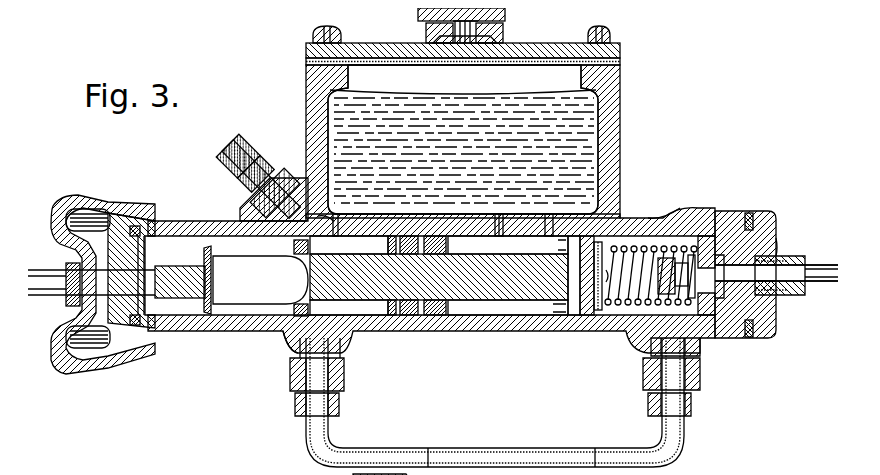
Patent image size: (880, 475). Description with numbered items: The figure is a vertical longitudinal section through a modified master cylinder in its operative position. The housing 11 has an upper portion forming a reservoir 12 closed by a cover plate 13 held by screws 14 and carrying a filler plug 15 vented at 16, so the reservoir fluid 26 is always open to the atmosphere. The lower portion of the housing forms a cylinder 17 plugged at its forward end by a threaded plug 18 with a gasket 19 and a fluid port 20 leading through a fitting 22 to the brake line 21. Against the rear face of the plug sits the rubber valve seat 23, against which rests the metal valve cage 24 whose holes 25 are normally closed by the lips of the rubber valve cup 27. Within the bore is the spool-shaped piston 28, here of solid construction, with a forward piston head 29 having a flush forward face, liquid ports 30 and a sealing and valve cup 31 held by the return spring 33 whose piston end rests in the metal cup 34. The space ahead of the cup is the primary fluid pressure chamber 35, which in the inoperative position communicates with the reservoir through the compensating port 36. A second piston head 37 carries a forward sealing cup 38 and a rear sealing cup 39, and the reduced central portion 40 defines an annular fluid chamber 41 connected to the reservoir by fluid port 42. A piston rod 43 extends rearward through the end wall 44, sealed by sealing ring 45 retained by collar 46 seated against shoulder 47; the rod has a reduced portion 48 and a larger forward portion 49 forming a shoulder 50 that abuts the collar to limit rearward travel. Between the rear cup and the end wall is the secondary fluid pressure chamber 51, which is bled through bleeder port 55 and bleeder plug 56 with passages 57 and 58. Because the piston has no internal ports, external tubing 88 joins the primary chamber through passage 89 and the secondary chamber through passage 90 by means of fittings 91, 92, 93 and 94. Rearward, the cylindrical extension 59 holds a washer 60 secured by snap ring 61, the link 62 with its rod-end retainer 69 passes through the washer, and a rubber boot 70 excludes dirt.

The housing 11 is at (605, 119).
The reservoir 12 is at (592, 100).
The cover plate 13 is at (390, 35).
The screws 14 is at (308, 26).
The filler plug 15 is at (402, 470).
The vents 16 is at (497, 10).
The cylinder 17 is at (656, 250).
The threaded plug 18 is at (770, 226).
The gasket 19 is at (752, 210).
The fluid port 20 is at (740, 257).
The brake line 21 is at (810, 276).
The fitting 22 is at (784, 252).
The rubber valve seat 23 is at (738, 208).
The metal valve cage 24 is at (596, 306).
The holes 25 is at (676, 255).
The fluid 26 is at (370, 82).
The rubber valve cup 27 is at (714, 282).
The piston 28 is at (508, 306).
The forward piston head 29 is at (594, 300).
The liquid ports 30 is at (550, 306).
The sealing and valve cup 31 is at (585, 228).
The return spring 33 is at (613, 228).
The metal cup 34 is at (558, 236).
The primary fluid pressure chamber 35 is at (600, 297).
The compensating port 36 is at (541, 210).
The second piston head 37 is at (404, 228).
The forward sealing cup 38 is at (428, 228).
The rear sealing cup 39 is at (386, 228).
The central portion 40 is at (508, 244).
The annular fluid chamber 41 is at (466, 292).
The fluid port 42 is at (491, 210).
The piston rod 43 is at (226, 262).
The end wall 44 is at (284, 240).
The sealing ring 45 is at (290, 246).
The collar 46 is at (349, 307).
The shoulder 47 is at (272, 330).
The reduced-diameter rod portion 48 is at (398, 307).
The forward rod portion 49 is at (424, 307).
The shoulder 50 is at (349, 244).
The secondary fluid pressure chamber 51 is at (328, 226).
The bleeder port 55 is at (320, 210).
The bleeder plug 56 is at (252, 152).
The fluid passage 57 is at (280, 178).
The fluid passage 58 is at (226, 150).
The cylindrical extension 59 is at (172, 213).
The washer 60 is at (134, 241).
The snap ring 61 is at (100, 201).
The link 62 is at (132, 268).
The retainer washer 69 is at (198, 292).
The rubber boot 70 is at (66, 188).
The tubing 88 is at (452, 440).
The passage 89 is at (694, 345).
The passage 90 is at (336, 362).
The fitting 91 is at (692, 372).
The fitting 92 is at (683, 398).
The fitting 93 is at (285, 345).
The fitting 94 is at (287, 396).